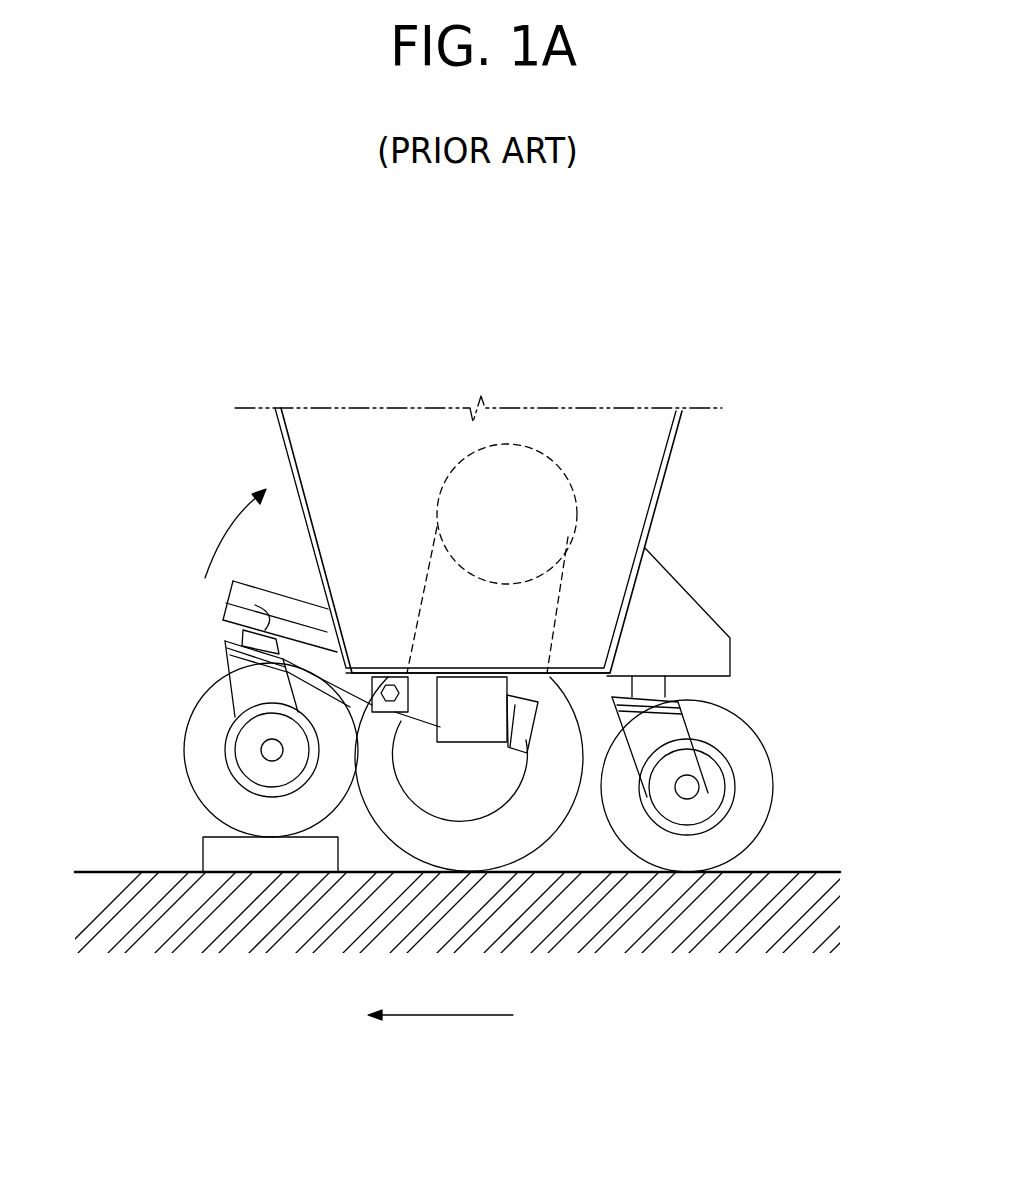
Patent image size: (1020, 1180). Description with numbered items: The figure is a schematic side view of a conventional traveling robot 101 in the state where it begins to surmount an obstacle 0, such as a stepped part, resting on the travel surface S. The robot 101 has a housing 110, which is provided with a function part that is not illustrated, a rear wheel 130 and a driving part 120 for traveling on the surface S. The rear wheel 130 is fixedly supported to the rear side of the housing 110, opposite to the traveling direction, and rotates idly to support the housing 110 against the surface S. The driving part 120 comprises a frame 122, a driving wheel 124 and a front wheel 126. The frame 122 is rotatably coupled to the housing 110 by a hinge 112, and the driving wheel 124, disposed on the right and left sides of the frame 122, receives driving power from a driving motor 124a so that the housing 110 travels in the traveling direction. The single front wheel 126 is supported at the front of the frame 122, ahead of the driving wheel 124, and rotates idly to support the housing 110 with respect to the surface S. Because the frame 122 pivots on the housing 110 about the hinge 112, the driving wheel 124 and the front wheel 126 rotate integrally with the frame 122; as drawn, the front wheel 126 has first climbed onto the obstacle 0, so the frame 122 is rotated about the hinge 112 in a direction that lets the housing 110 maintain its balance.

The traveling robot 101 is at (172, 327).
The housing 110 is at (652, 463).
The hinge 112 is at (387, 680).
The driving part 120 is at (98, 582).
The frame 122 is at (232, 600).
The driving wheel 124 is at (243, 649).
The driving motor 124a is at (512, 458).
The front wheel 126 is at (213, 693).
The rear wheel 130 is at (760, 772).
The obstacle 0 is at (208, 848).
The travel surface S is at (785, 872).